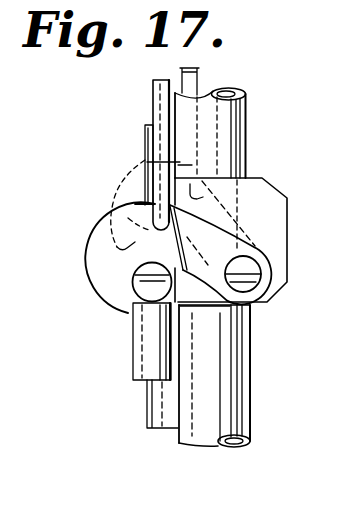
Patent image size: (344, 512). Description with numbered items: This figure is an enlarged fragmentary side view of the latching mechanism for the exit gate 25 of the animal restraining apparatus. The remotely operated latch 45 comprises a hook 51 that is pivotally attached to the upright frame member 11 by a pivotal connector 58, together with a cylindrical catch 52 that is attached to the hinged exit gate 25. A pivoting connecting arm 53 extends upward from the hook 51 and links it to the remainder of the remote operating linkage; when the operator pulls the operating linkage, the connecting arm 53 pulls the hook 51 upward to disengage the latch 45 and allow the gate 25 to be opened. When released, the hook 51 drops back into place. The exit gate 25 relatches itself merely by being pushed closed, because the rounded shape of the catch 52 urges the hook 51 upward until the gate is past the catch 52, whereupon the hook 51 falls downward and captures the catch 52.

The upright frame member 11 is at (240, 363).
The exit gate 25 is at (148, 413).
The latch 45 is at (78, 237).
The hook 51 is at (101, 290).
The cylindrical catch 52 is at (150, 297).
The connecting arm 53 is at (153, 99).
The pivotal connector 58 is at (262, 272).